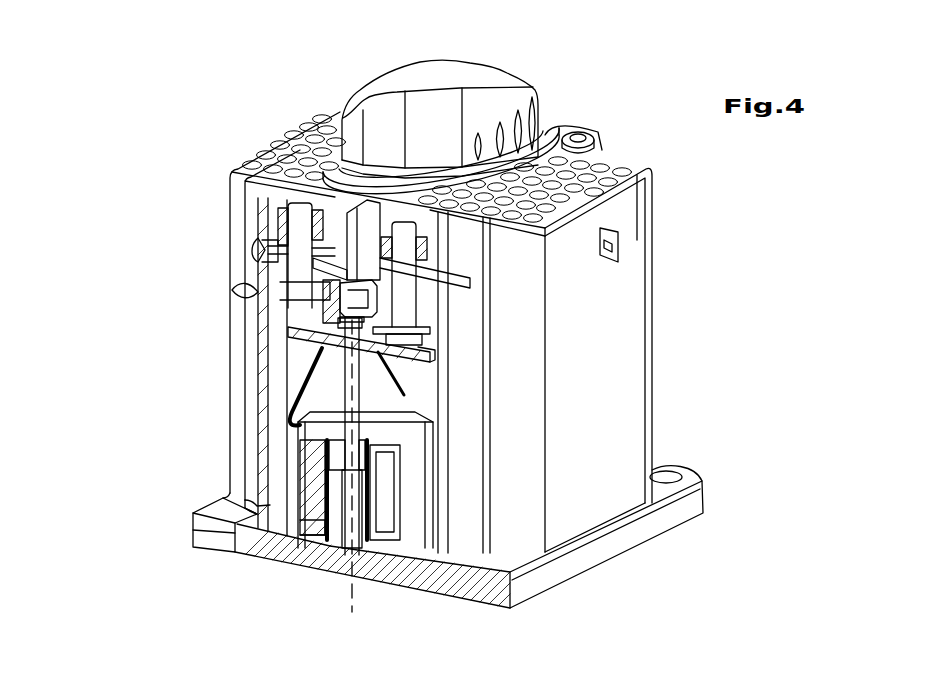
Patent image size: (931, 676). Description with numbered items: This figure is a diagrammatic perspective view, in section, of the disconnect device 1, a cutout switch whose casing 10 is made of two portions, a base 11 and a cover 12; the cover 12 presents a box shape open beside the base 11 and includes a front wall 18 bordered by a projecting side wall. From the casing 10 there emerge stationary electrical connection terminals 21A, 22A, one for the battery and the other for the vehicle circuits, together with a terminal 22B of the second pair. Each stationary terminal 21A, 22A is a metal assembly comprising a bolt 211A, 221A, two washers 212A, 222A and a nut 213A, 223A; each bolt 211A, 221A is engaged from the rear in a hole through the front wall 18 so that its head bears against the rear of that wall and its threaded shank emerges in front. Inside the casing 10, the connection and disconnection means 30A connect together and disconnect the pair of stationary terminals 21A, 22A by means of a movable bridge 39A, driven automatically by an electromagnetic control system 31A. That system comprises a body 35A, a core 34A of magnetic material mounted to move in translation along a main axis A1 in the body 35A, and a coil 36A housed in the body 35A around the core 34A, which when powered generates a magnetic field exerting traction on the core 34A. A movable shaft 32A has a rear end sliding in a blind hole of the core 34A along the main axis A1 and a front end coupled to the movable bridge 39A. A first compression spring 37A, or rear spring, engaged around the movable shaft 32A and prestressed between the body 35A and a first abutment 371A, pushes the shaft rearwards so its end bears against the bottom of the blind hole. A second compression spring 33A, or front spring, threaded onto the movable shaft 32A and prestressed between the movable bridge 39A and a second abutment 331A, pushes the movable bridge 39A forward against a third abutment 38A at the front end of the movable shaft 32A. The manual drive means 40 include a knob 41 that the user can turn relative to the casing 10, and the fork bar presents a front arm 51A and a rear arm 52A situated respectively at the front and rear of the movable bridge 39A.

The disconnect device 1 is at (676, 218).
The casing 10 is at (728, 405).
The base 11 is at (712, 498).
The cover 12 is at (703, 472).
The front wall 18 is at (242, 296).
The stationary terminal 21A is at (108, 258).
The bolt 211A is at (233, 262).
The washers 212A is at (232, 250).
The nut 213A is at (260, 242).
The stationary terminal 22A is at (633, 277).
The bolt 221A is at (420, 303).
The washers 222A is at (418, 252).
The nut 223A is at (425, 222).
The stationary terminal 22B is at (600, 150).
The connection and disconnection means 30A is at (327, 560).
The electromagnetic control system 31A is at (300, 470).
The movable shaft 32A is at (325, 402).
The second compression spring 33A is at (345, 292).
The second abutment 331A is at (408, 357).
The core 34A is at (330, 498).
The body 35A is at (447, 560).
The coil 36A is at (387, 497).
The first compression spring 37A is at (375, 462).
The first abutment 371A is at (294, 488).
The third abutment 38A is at (402, 323).
The movable bridge 39A is at (300, 333).
The manual drive means 40 is at (410, 60).
The knob 41 is at (364, 91).
The front arm 51A is at (285, 290).
The rear arm 52A is at (300, 378).
The main axis A1 is at (355, 592).